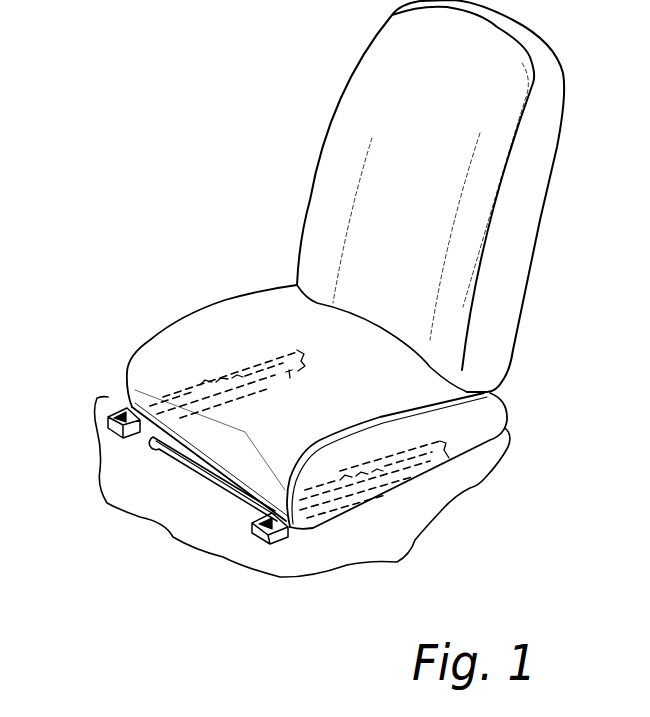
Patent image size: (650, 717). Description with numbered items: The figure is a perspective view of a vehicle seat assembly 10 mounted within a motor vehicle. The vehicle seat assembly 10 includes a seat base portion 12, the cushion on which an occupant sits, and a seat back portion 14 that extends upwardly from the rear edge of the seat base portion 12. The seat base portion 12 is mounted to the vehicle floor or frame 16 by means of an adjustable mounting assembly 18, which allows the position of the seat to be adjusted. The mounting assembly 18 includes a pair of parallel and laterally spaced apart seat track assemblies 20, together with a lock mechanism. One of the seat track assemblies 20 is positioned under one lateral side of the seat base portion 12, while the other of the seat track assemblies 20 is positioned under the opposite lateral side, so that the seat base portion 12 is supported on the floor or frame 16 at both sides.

The vehicle seat assembly 10 is at (243, 95).
The seat base portion 12 is at (127, 368).
The seat back portion 14 is at (533, 258).
The vehicle floor or frame 16 is at (490, 465).
The adjustable mounting assembly 18 is at (160, 454).
The seat track assemblies 20 is at (110, 418).